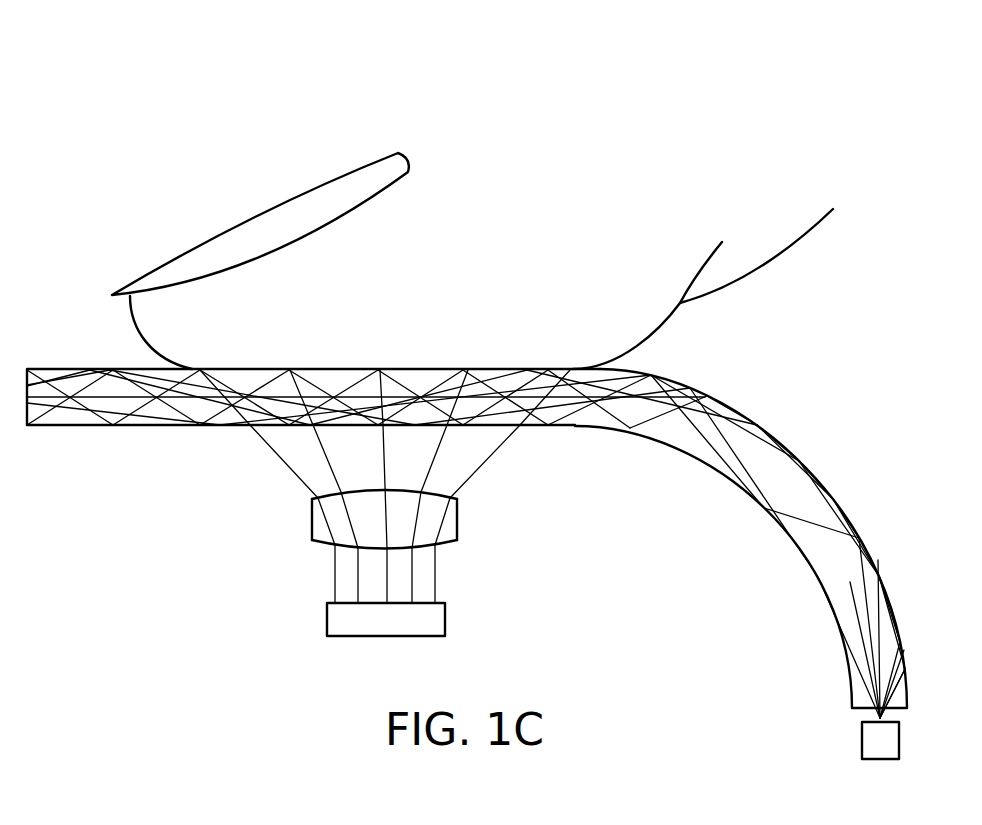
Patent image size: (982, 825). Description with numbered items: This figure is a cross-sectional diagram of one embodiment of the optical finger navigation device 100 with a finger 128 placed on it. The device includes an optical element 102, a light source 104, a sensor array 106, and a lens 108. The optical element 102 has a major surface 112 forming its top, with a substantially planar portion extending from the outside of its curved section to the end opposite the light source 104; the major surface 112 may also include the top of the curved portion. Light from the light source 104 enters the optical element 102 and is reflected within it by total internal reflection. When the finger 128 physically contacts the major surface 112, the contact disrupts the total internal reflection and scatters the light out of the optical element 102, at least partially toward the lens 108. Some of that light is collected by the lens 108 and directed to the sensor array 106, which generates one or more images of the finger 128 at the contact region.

The optical finger navigation device 100 is at (202, 47).
The optical element 102 is at (754, 503).
The light source 104 is at (862, 744).
The sensor array 106 is at (327, 621).
The lens 108 is at (457, 520).
The major surface 112 is at (124, 360).
The finger 128 is at (787, 250).